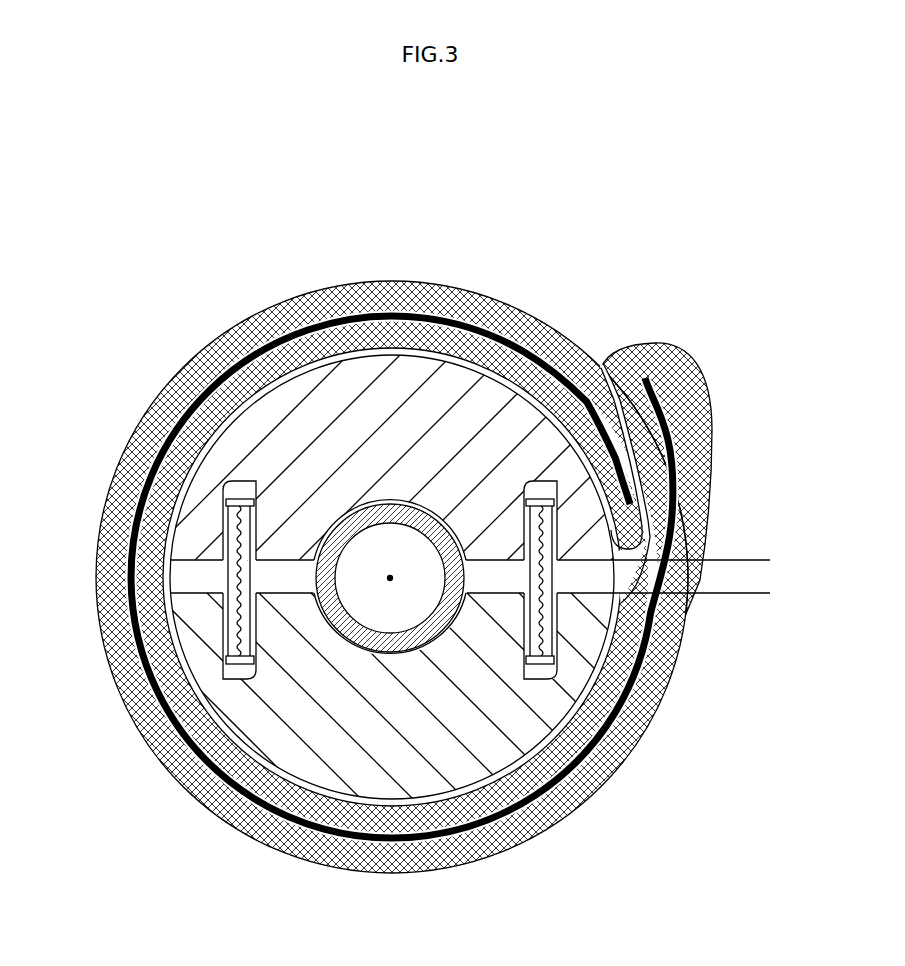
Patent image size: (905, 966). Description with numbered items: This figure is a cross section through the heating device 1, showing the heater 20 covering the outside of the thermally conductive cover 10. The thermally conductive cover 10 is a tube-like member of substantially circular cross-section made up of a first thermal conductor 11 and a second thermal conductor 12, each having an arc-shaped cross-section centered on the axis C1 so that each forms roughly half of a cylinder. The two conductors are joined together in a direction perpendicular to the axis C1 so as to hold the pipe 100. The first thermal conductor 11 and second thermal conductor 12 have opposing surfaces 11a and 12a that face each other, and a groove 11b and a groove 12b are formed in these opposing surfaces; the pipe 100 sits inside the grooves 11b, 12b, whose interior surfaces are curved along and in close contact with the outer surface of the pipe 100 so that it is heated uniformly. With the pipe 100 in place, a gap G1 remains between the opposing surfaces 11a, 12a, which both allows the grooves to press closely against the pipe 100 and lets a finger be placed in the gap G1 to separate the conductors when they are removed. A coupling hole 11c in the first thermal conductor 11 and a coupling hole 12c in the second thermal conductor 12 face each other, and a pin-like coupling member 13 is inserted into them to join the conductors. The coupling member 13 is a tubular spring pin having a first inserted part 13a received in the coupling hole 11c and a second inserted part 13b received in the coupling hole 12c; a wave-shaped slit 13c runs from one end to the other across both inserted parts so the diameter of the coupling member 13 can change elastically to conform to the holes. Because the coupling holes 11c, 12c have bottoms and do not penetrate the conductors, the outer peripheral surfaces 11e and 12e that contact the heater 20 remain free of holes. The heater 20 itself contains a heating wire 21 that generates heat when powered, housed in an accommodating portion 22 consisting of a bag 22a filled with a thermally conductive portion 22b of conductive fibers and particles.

The heating device 1 is at (592, 233).
The thermally conductive cover 10 is at (433, 591).
The first thermal conductor 11 is at (414, 752).
The opposing surface of the first thermal conductor 11a is at (186, 593).
The groove of the first thermal conductor 11b is at (371, 655).
The coupling hole of the first thermal conductor 11c is at (246, 681).
The outer peripheral surface of the first thermal conductor 11e is at (380, 798).
The second thermal conductor 12 is at (441, 420).
The opposing surface of the second thermal conductor 12a is at (196, 570).
The groove of the second thermal conductor 12b is at (347, 515).
The coupling hole of the second thermal conductor 12c is at (229, 483).
The outer peripheral surface of the second thermal conductor 12e is at (215, 372).
The coupling member 13 is at (382, 589).
The first inserted part 13a is at (256, 659).
The second inserted part 13b is at (256, 541).
The slit 13c is at (252, 594).
The heater 20 is at (404, 517).
The heating wire 21 is at (433, 316).
The accommodating portion 22 is at (404, 537).
The bag 22a is at (497, 302).
The thermally conductive portion 22b is at (526, 337).
The pipe 100 is at (380, 504).
The axis C1 is at (389, 581).
The gap G1 is at (765, 560).